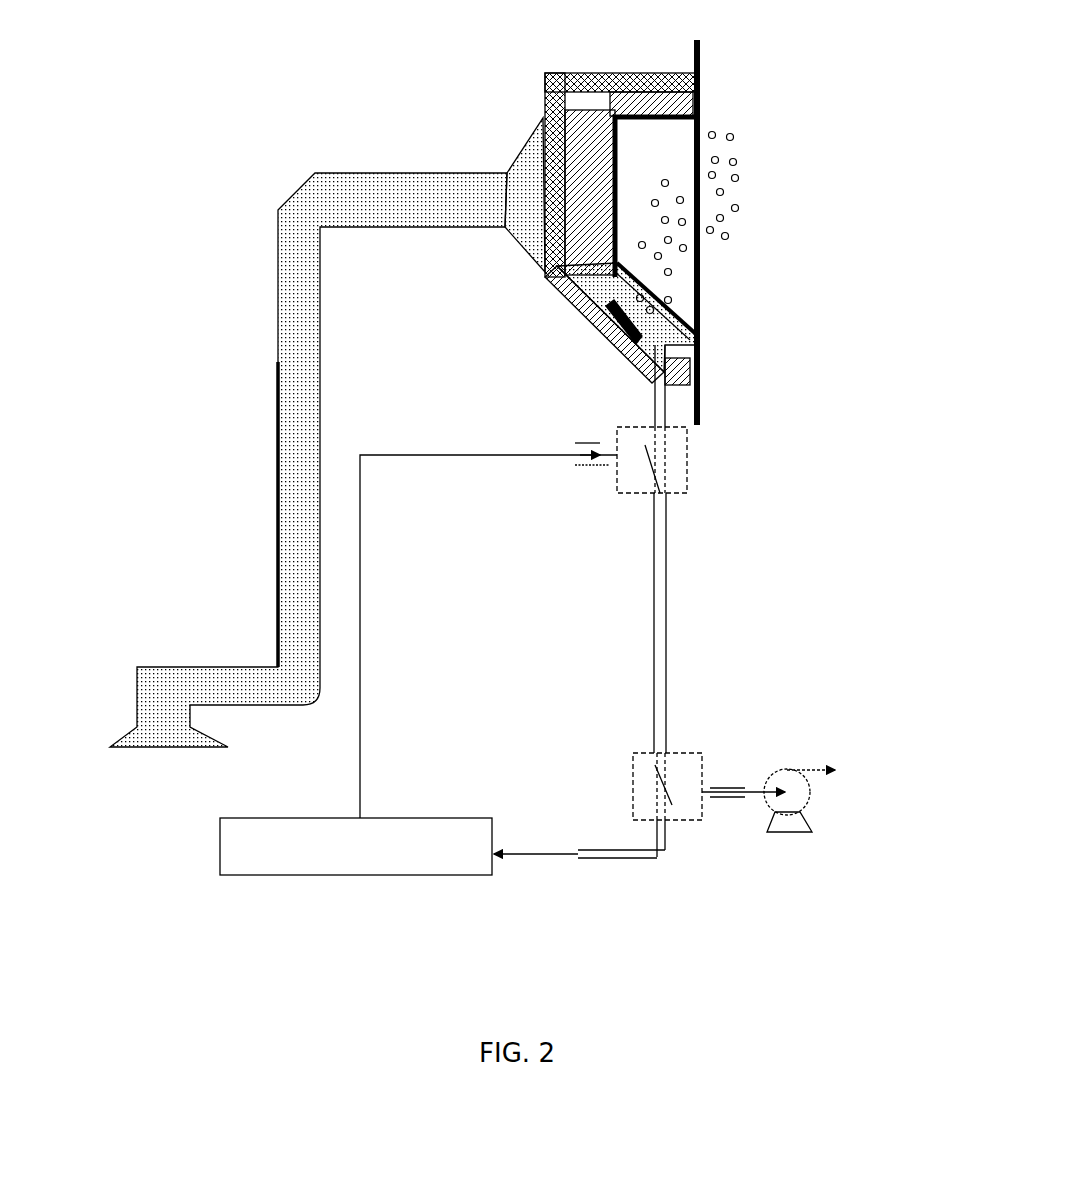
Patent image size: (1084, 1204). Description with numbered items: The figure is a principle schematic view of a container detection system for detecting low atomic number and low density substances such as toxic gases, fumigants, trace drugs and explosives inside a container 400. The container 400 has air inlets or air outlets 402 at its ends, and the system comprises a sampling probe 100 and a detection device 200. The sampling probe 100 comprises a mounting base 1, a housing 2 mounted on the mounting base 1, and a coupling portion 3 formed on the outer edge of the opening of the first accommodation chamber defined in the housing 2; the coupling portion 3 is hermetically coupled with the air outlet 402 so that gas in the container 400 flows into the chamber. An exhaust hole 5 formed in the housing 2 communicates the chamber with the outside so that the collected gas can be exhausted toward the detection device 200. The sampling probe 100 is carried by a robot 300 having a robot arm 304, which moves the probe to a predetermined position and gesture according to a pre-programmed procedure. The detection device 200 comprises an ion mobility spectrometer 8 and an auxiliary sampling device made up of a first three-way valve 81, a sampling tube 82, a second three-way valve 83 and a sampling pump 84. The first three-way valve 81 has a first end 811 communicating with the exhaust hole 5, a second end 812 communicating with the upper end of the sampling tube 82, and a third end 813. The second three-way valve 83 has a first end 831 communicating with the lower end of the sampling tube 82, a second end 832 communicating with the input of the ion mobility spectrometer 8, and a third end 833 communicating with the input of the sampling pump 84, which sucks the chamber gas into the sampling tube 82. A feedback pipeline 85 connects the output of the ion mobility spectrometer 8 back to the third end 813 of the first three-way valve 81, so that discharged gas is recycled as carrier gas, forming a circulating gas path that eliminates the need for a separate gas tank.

The mounting base 1 is at (557, 170).
The housing 2 is at (592, 322).
The coupling portion 3 is at (688, 72).
The exhaust hole 5 is at (665, 372).
The ion mobility spectrometer 8 is at (263, 853).
The first three-way valve 81 is at (673, 467).
The sampling tube 82 is at (662, 620).
The second three-way valve 83 is at (680, 777).
The sampling pump 84 is at (793, 802).
The feedback pipeline 85 is at (360, 546).
The sampling probe 100 is at (625, 85).
The detection device 200 is at (793, 562).
The robot 300 is at (302, 313).
The robot arm 304 is at (530, 197).
The container 400 is at (700, 60).
The air outlet 402 is at (700, 208).
The first end of first three-way valve 811 is at (660, 423).
The second end of first three-way valve 812 is at (658, 500).
The third end of first three-way valve 813 is at (615, 455).
The first end of second three-way valve 831 is at (663, 742).
The second end of second three-way valve 832 is at (655, 822).
The third end of second three-way valve 833 is at (693, 797).